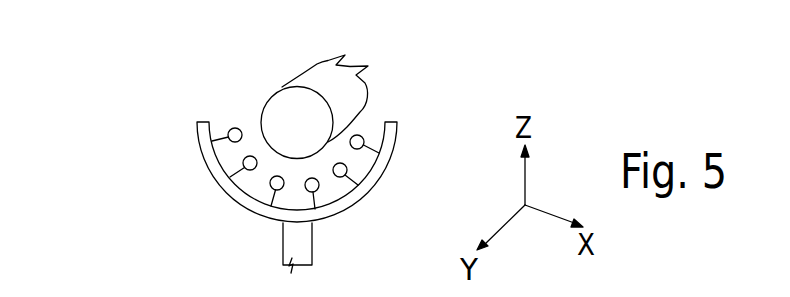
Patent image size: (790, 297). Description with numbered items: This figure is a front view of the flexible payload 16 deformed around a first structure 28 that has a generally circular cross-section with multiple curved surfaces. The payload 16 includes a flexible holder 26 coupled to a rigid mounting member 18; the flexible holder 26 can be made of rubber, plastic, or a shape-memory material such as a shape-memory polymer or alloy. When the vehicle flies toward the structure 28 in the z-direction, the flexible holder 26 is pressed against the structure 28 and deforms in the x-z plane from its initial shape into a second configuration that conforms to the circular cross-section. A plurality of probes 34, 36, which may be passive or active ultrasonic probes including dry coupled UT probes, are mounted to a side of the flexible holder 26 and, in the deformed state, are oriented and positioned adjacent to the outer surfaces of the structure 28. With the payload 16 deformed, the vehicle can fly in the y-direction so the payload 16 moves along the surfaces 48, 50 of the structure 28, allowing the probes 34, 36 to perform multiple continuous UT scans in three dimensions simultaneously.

The payload 16 is at (97, 222).
The rigid mounting member 18 is at (283, 242).
The flexible holder 26 is at (198, 162).
The structure 28 is at (268, 73).
The probe 34 is at (227, 175).
The probe 36 is at (347, 172).
The surface 48 is at (367, 80).
The surface 50 is at (305, 78).